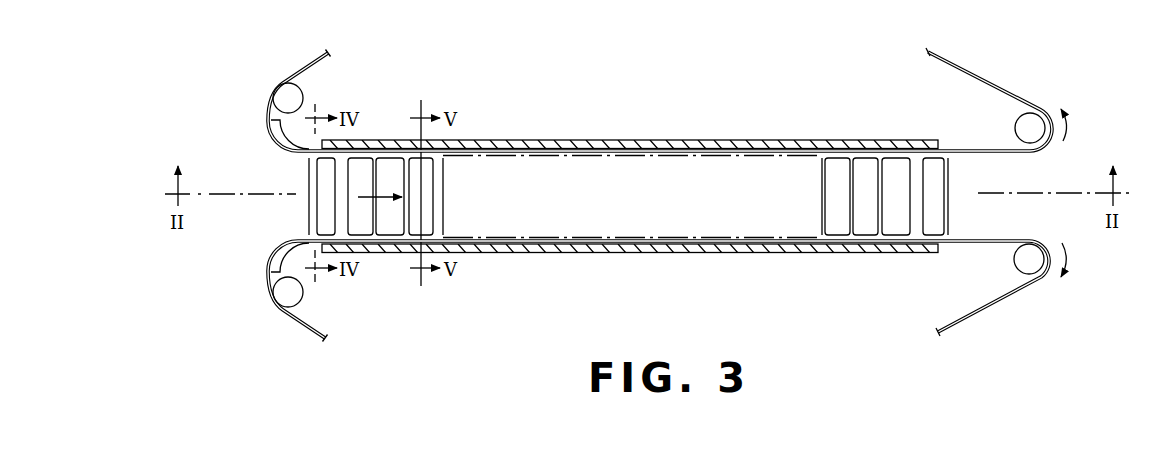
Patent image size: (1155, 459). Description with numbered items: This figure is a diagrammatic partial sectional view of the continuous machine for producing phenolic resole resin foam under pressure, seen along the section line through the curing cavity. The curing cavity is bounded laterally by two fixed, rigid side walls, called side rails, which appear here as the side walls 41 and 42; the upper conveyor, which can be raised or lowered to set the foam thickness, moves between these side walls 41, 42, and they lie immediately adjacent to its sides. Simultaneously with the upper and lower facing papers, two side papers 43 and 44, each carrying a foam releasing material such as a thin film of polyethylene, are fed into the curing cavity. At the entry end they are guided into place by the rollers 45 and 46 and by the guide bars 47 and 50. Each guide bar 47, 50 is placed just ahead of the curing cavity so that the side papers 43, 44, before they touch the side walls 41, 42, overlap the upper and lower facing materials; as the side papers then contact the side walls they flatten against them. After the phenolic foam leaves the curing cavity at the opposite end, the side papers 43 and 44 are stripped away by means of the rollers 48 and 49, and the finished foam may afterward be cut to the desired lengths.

The side wall 41 is at (630, 141).
The side wall 42 is at (645, 253).
The side paper 43 is at (318, 58).
The side paper 44 is at (311, 330).
The roller 45 is at (299, 91).
The roller 46 is at (300, 299).
The guide bar 47 is at (284, 136).
The roller 48 is at (1017, 121).
The roller 49 is at (1015, 260).
The guide bar 50 is at (284, 258).